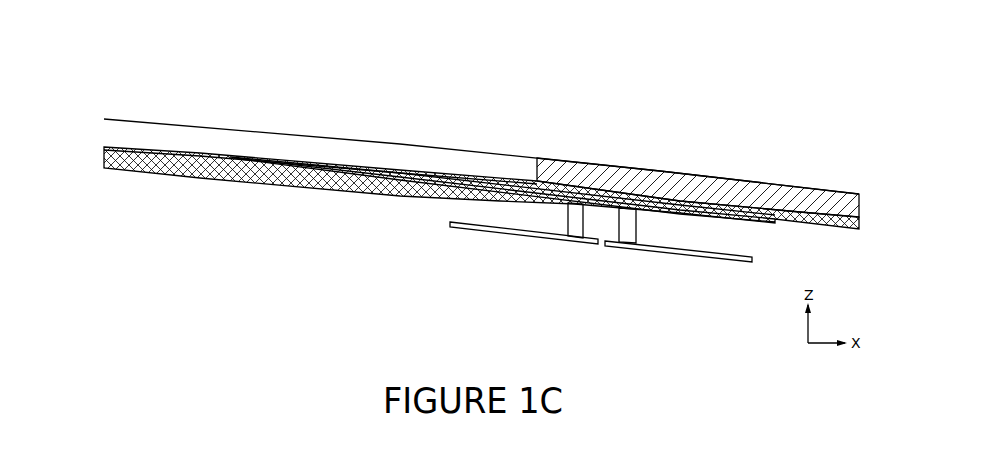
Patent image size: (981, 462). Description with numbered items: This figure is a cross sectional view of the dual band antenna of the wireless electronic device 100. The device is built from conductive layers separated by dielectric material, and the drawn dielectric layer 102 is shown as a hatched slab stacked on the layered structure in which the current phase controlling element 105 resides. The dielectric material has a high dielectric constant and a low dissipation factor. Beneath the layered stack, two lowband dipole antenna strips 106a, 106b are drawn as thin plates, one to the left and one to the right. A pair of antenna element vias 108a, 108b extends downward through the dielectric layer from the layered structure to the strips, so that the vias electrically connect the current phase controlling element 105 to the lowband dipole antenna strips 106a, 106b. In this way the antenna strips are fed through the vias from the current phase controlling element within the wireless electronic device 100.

The wireless electronic device 100 is at (690, 118).
The dielectric layer 102 is at (653, 168).
The current phase controlling element 105 is at (453, 182).
The lowband dipole antenna strip 106a is at (588, 242).
The lowband dipole antenna strip 106b is at (685, 255).
The antenna element via 108a is at (577, 224).
The antenna element via 108b is at (630, 222).